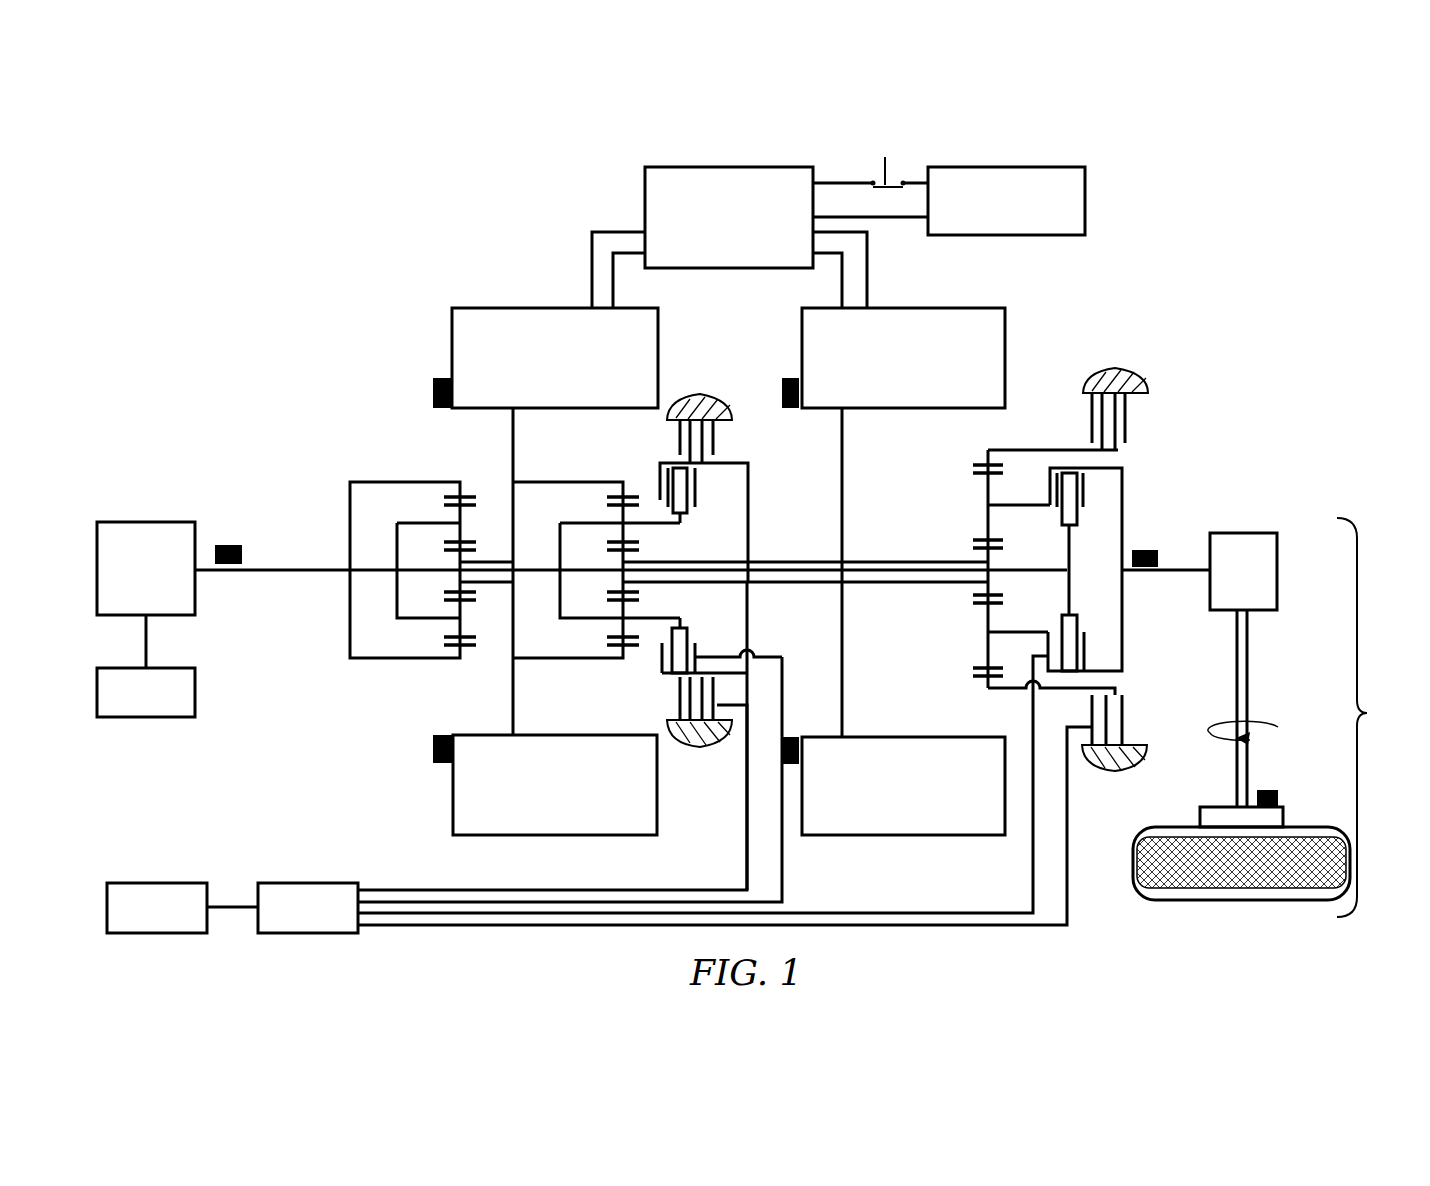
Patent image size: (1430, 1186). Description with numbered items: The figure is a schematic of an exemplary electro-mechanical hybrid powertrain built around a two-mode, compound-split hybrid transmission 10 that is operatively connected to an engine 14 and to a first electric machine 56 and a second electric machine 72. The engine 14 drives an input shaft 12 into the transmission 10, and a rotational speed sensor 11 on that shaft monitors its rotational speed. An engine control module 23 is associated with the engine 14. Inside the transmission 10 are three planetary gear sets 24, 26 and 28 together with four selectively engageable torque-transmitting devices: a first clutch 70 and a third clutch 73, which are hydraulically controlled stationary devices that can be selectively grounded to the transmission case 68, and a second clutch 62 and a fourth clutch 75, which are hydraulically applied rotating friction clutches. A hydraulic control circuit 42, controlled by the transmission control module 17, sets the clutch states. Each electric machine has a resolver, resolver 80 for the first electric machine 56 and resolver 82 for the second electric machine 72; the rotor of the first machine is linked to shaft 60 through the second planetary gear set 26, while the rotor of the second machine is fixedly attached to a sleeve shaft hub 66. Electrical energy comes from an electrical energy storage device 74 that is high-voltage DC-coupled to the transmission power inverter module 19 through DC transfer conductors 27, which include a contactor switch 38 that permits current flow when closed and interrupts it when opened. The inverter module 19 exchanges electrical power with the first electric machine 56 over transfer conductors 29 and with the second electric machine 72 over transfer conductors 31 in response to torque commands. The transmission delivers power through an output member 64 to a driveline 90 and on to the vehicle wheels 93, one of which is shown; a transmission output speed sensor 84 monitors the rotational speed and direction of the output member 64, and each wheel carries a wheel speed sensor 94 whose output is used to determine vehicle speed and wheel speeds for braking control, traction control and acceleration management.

The electro-mechanical hybrid transmission 10 is at (410, 266).
The rotational speed sensor 11 is at (228, 545).
The input shaft 12 is at (310, 568).
The engine 14 is at (150, 522).
The transmission control module 17 is at (140, 883).
The transmission power inverter module 19 is at (645, 185).
The engine control module 23 is at (195, 706).
The first planetary gear set 24 is at (450, 478).
The second planetary gear set 26 is at (615, 478).
The DC transfer conductors 27 is at (830, 183).
The third planetary gear set 28 is at (982, 448).
The transfer conductors 29 is at (592, 268).
The transfer conductors 31 is at (867, 262).
The contactor switch 38 is at (893, 178).
The hydraulic control circuit 42 is at (270, 883).
The first electric machine 56 is at (452, 343).
The shaft 60 is at (1045, 569).
The clutch C2 62 is at (1105, 508).
The output member 64 is at (1180, 565).
The sleeve shaft hub 66 is at (878, 560).
The transmission case 68 is at (697, 400).
The clutch C1 70 is at (1082, 405).
The second electric machine 72 is at (1005, 325).
The clutch C3 73 is at (728, 440).
The electrical energy storage device 74 is at (1085, 190).
The clutch C4 75 is at (704, 503).
The resolver 80 is at (433, 393).
The resolver 82 is at (790, 378).
The transmission output speed sensor 84 is at (1150, 548).
The driveline 90 is at (1368, 712).
The vehicle wheel 93 is at (1200, 818).
The wheel speed sensor 94 is at (1270, 790).